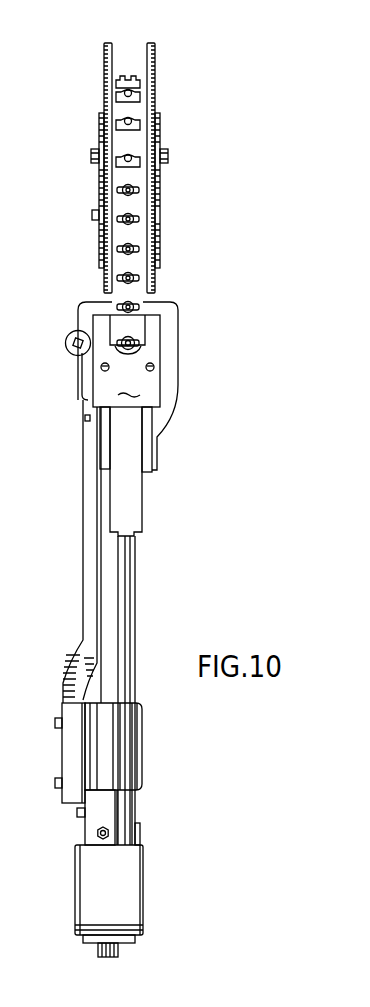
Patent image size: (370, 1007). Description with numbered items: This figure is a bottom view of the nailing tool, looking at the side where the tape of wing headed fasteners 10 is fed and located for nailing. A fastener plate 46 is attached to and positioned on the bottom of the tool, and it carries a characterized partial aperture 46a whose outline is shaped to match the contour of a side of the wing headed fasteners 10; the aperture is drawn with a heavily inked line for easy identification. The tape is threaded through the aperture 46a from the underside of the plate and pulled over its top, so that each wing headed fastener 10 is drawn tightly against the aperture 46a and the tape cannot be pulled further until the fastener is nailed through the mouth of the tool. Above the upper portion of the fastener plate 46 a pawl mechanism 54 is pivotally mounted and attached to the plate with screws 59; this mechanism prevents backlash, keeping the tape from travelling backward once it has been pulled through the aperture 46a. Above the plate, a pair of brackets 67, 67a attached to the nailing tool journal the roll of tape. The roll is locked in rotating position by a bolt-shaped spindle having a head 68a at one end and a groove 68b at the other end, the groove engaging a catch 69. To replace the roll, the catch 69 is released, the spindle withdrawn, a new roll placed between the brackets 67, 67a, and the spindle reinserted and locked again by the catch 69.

The wing headed fastener 10 is at (134, 340).
The fastener plate 46 is at (126, 361).
The partial aperture 46a is at (118, 351).
The pawl mechanism 54 is at (155, 466).
The screws 59 is at (101, 369).
The bracket 67 is at (104, 246).
The bracket 67a is at (157, 226).
The head 68a is at (168, 156).
The groove 68b is at (91, 155).
The catch 69 is at (99, 190).